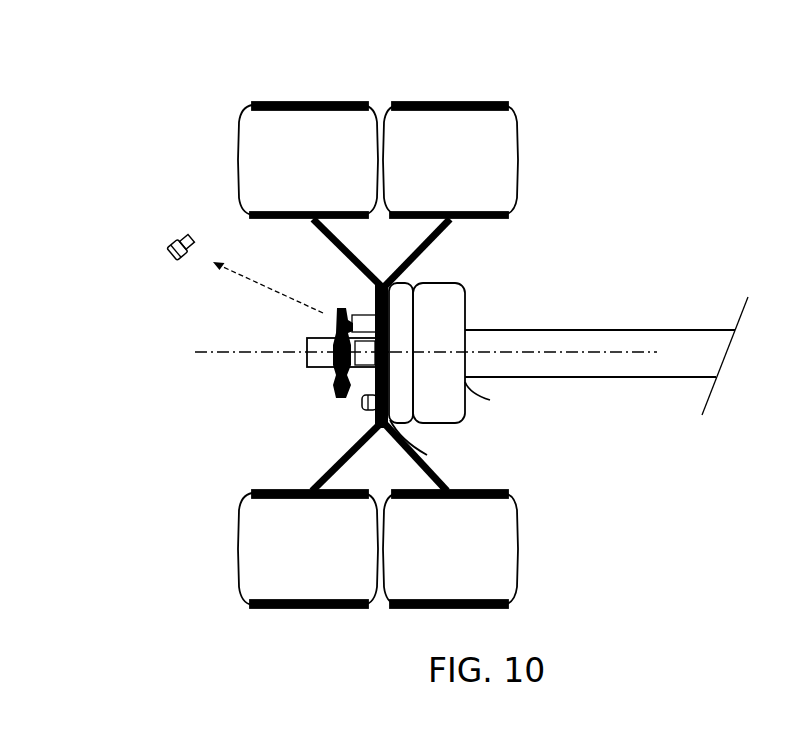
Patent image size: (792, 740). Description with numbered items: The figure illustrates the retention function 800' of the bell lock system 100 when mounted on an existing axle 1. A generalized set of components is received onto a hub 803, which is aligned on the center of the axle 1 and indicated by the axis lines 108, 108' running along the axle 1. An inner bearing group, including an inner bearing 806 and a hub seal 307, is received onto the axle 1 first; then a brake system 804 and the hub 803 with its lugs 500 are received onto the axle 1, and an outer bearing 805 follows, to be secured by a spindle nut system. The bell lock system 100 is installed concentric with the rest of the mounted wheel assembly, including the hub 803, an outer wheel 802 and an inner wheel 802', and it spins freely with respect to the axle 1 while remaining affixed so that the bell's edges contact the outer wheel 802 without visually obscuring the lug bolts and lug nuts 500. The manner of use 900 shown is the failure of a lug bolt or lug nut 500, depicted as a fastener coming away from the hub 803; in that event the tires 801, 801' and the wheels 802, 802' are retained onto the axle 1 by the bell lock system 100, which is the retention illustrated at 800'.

The retention illustration 800' is at (480, 39).
The tire 801 is at (308, 355).
The tire 801' is at (450, 355).
The outer wheel 802 is at (343, 355).
The inner wheel 802' is at (433, 355).
The hub 803 is at (401, 283).
The brake system 804 is at (450, 283).
The outer bearing 805 is at (429, 443).
The inner bearing 806 is at (499, 400).
The axle 1 is at (606, 351).
The axis 108 is at (550, 353).
The axis 108' is at (264, 353).
The bell lock system 100 is at (332, 374).
The hub seal 307 is at (372, 370).
The lug nuts 500 is at (168, 240).
The manner of use 900 is at (248, 289).